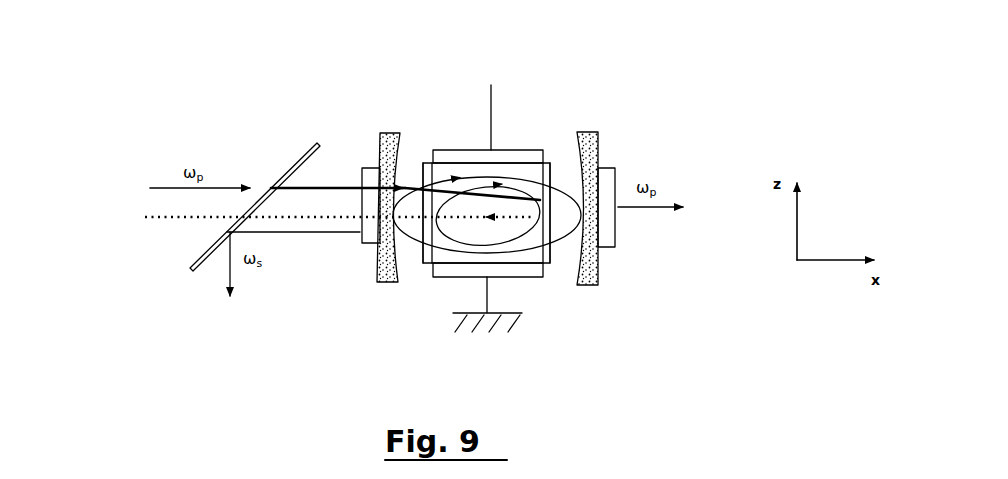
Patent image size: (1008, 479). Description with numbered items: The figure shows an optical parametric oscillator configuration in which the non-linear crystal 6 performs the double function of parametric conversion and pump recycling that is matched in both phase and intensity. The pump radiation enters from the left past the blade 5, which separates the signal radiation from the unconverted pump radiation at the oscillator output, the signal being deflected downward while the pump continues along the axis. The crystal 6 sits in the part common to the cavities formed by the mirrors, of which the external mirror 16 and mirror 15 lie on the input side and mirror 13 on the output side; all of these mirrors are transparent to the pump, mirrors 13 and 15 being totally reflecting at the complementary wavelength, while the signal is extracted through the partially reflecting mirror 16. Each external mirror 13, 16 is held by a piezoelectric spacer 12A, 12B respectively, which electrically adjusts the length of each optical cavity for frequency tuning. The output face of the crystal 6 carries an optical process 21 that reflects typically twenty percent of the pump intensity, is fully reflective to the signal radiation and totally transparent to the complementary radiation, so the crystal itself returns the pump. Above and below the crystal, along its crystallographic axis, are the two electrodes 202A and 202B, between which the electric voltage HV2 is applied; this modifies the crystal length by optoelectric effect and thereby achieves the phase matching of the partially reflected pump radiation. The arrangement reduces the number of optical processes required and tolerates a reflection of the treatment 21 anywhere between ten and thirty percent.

The blade 5 is at (312, 148).
The piezoelectric spacer 12B is at (370, 232).
The mirror 16 is at (387, 133).
The mirror 15 is at (428, 163).
The non-linear crystal 6 is at (483, 265).
The optical process 21 is at (550, 163).
The electrode 202A is at (463, 150).
The electrode 202B is at (522, 270).
The electric voltage HV2 is at (500, 101).
The mirror 13 is at (583, 287).
The piezoelectric spacer 12A is at (608, 232).